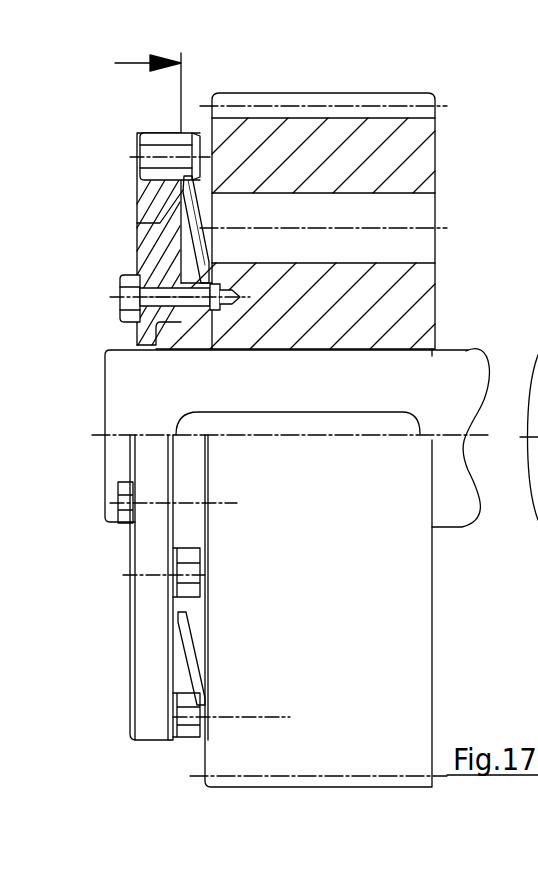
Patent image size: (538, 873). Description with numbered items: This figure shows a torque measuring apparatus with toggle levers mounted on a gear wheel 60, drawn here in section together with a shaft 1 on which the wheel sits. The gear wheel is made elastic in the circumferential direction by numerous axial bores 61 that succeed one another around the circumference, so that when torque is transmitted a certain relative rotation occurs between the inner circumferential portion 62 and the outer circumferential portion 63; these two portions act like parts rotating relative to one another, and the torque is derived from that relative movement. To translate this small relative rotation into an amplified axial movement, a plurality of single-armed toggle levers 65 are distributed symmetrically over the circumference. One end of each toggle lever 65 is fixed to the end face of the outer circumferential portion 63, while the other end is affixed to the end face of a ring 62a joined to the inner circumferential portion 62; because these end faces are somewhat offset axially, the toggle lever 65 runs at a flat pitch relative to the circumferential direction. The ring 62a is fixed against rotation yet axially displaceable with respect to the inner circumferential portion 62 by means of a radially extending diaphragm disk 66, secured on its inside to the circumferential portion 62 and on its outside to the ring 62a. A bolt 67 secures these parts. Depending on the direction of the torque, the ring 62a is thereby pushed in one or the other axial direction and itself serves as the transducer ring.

The shaft 1 is at (160, 390).
The gear wheel 60 is at (312, 112).
The axial bores 61 is at (390, 246).
The inner circumferential portion 62 is at (388, 313).
The ring 62a is at (143, 171).
The outer circumferential portion 63 is at (385, 163).
The toggle lever 65 is at (207, 216).
The diaphragm disk 66 is at (153, 206).
The bolt 67 is at (135, 258).